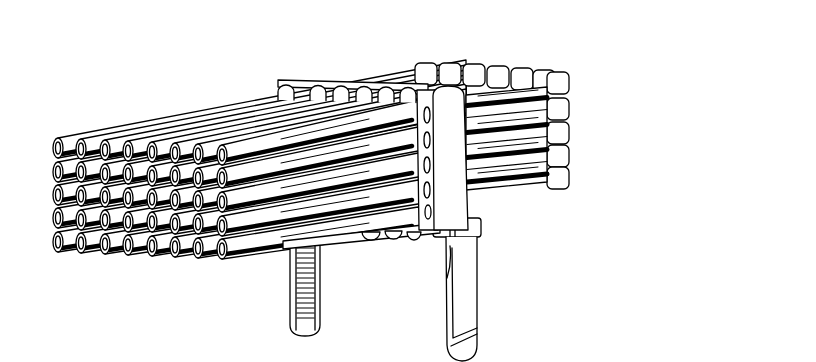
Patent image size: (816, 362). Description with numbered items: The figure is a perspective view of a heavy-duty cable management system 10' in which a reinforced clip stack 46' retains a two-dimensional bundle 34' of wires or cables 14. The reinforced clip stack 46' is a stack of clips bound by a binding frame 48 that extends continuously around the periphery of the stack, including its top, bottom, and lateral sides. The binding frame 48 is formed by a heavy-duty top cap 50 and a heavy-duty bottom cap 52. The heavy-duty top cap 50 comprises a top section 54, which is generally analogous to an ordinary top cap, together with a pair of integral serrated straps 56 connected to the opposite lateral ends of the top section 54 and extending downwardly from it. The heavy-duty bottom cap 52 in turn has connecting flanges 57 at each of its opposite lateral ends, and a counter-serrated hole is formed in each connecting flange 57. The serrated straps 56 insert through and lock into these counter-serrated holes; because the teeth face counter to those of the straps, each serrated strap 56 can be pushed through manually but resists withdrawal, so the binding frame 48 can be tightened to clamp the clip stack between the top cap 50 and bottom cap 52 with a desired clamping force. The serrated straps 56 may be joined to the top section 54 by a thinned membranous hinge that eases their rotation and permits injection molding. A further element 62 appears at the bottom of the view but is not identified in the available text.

The heavy-duty cable management system 10' is at (394, 182).
The two-dimensional bundle 34' is at (259, 190).
The wires or cables 14 is at (255, 256).
The reinforced clip stack 46' is at (352, 120).
The heavy-duty top cap 50 is at (329, 62).
The top section 54 is at (407, 74).
The binding frame 48 is at (474, 204).
The heavy-duty bottom cap 52 is at (353, 240).
The serrated straps 56 is at (468, 303).
The connecting flanges 57 is at (446, 272).
The base 62 is at (171, 355).